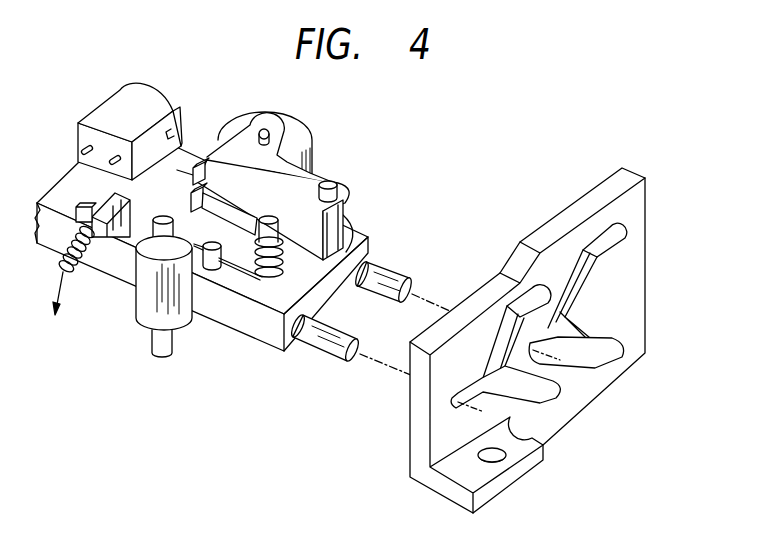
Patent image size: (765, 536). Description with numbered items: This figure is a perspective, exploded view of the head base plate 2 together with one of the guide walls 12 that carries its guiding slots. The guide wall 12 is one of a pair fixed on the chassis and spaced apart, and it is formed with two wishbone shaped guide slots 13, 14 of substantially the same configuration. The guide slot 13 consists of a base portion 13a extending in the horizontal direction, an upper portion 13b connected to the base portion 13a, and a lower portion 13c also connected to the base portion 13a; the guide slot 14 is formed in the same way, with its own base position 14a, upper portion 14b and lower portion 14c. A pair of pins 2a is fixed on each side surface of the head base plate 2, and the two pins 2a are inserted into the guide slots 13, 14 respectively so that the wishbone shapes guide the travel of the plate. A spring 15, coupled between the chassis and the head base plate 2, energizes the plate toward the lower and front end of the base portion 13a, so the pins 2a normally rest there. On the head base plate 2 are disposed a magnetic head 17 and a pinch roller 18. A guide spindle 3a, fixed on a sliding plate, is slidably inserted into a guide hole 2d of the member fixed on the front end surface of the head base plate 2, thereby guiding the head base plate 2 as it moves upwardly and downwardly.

The head base plate 2 is at (263, 308).
The pins 2a is at (321, 352).
The guide hole 2d is at (147, 237).
The guide spindle 3a is at (172, 343).
The guide wall 12 is at (565, 208).
The guide slot 13 is at (517, 344).
The base portion 13a is at (457, 410).
The upper portion 13b is at (535, 291).
The lower portion 13c is at (558, 398).
The guide slot 14 is at (614, 310).
The base position 14a is at (545, 368).
The upper portion 14b is at (624, 236).
The lower portion 14c is at (620, 354).
The spring 15 is at (61, 269).
The magnetic head 17 is at (88, 118).
The pinch roller 18 is at (313, 133).